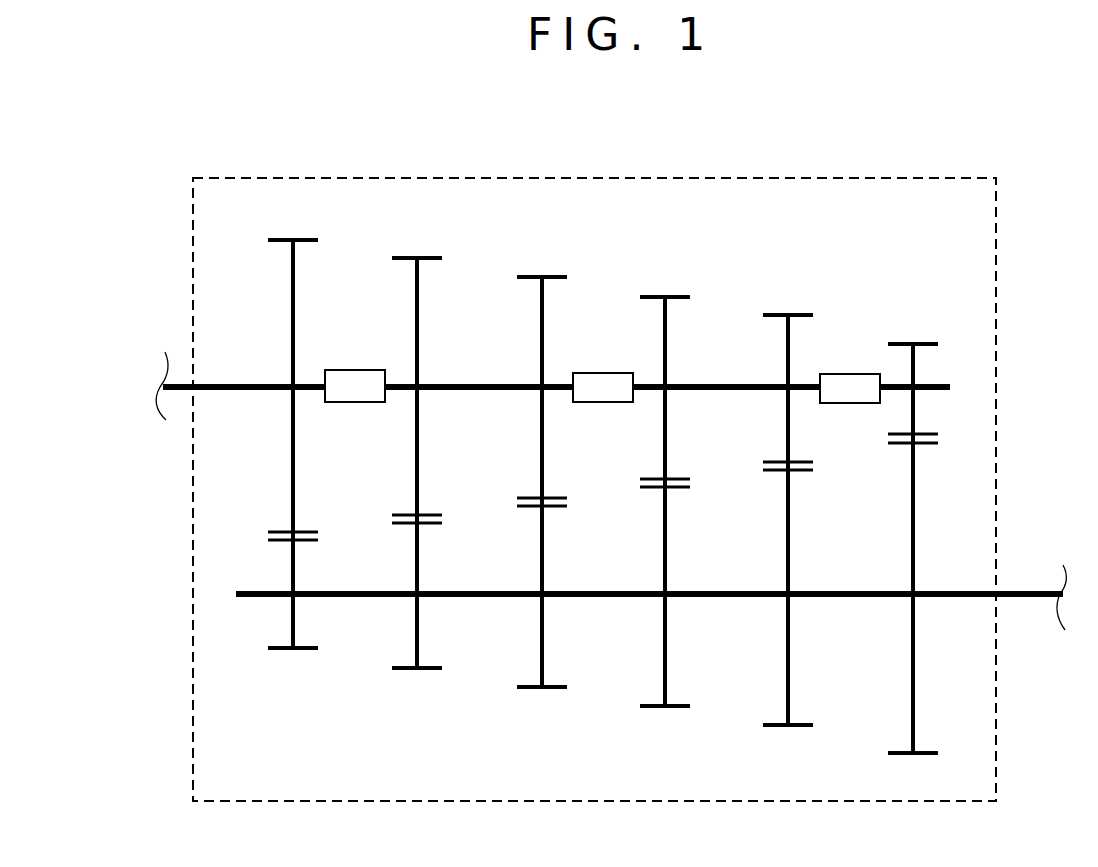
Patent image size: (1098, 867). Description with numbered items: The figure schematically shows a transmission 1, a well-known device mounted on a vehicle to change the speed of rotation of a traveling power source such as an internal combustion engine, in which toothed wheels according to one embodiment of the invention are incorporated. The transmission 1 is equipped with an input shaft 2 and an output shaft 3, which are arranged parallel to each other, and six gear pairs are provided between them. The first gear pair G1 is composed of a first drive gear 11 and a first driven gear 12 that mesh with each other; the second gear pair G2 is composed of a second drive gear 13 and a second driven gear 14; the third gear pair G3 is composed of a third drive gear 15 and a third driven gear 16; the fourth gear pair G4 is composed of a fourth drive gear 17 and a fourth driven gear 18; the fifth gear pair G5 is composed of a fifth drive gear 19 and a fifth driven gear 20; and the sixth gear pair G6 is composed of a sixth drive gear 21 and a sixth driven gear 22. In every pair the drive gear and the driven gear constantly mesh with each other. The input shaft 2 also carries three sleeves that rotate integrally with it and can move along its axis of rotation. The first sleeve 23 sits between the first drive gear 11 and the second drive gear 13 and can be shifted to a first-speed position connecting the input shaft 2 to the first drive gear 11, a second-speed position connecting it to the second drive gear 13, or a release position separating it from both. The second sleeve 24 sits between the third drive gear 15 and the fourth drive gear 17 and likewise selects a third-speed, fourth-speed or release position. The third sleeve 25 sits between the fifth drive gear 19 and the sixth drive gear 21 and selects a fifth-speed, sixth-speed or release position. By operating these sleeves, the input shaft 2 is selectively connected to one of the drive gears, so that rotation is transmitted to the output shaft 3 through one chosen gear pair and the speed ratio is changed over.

The transmission 1 is at (996, 238).
The input shaft 2 is at (232, 391).
The output shaft 3 is at (1032, 591).
The first drive gear 11 is at (922, 343).
The first driven gear 12 is at (914, 675).
The second drive gear 13 is at (785, 313).
The second driven gear 14 is at (790, 545).
The third drive gear 15 is at (660, 296).
The third driven gear 16 is at (667, 665).
The fourth drive gear 17 is at (539, 337).
The fourth driven gear 18 is at (555, 690).
The fifth drive gear 19 is at (414, 305).
The fifth driven gear 20 is at (410, 671).
The sixth drive gear 21 is at (290, 313).
The sixth driven gear 22 is at (283, 651).
The first sleeve 23 is at (855, 373).
The second sleeve 24 is at (607, 372).
The third sleeve 25 is at (352, 403).
The first gear pair G1 is at (932, 215).
The second gear pair G2 is at (804, 197).
The third gear pair G3 is at (679, 197).
The fourth gear pair G4 is at (555, 195).
The fifth gear pair G5 is at (425, 195).
The sixth gear pair G6 is at (305, 197).